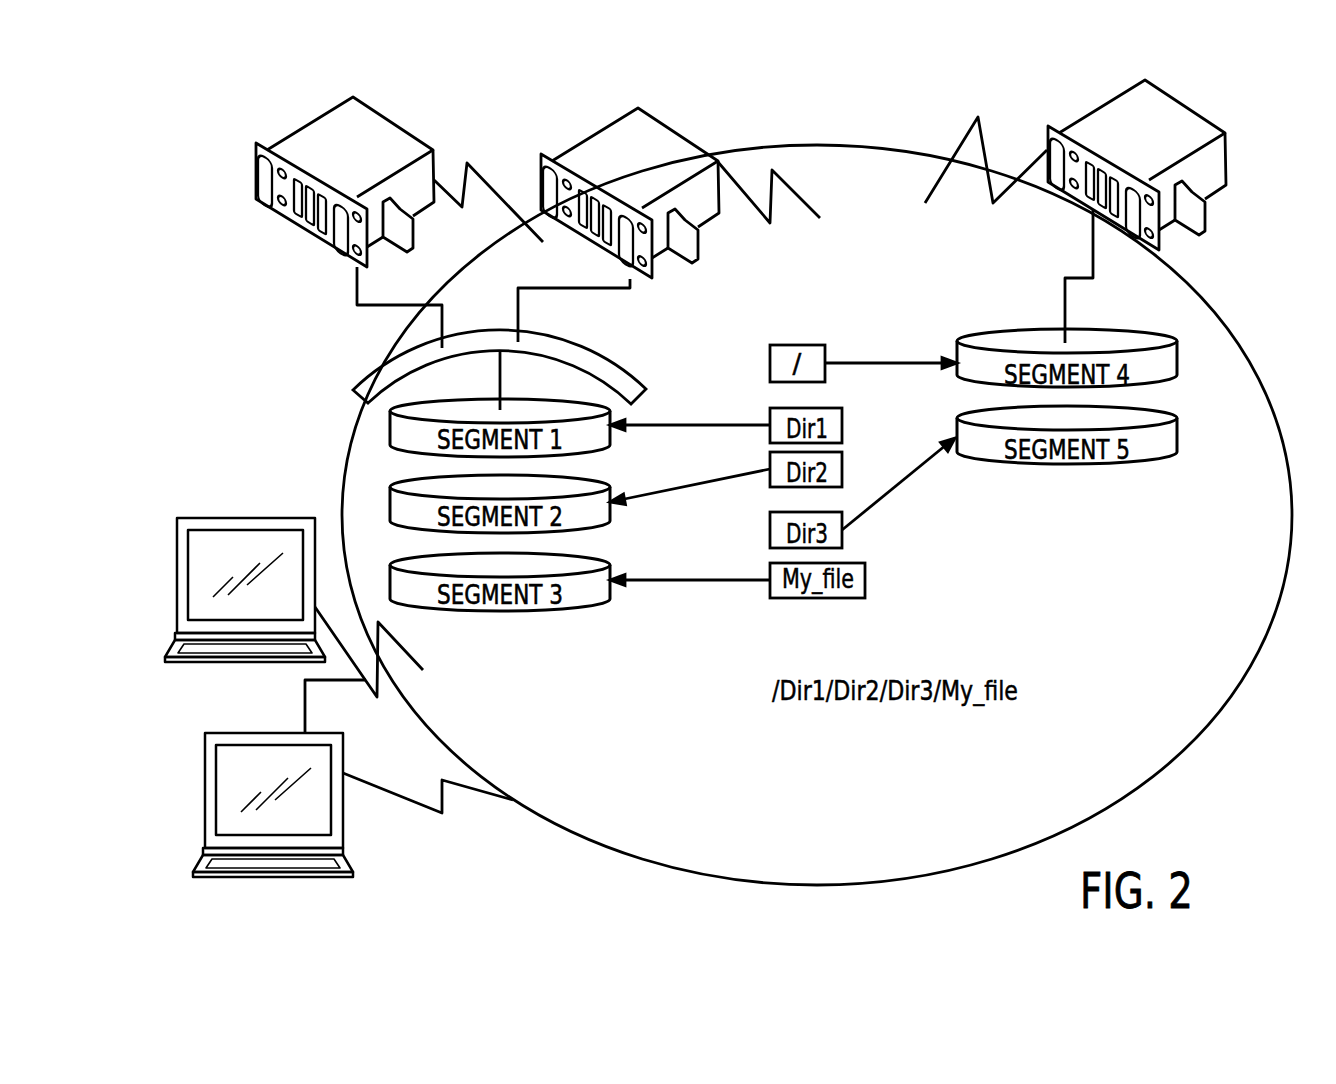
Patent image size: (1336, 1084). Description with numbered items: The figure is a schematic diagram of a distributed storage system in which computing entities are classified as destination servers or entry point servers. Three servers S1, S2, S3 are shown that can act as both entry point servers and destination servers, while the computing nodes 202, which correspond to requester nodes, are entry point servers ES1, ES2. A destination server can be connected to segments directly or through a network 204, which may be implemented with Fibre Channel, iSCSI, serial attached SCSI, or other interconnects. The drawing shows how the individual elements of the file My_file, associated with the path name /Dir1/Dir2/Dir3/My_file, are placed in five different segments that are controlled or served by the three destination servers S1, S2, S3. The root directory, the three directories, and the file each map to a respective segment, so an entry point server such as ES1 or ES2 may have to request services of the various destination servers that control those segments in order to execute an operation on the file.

The computing nodes 202 is at (227, 714).
The network 204 is at (597, 356).
The server S1 is at (315, 185).
The server S2 is at (668, 203).
The server S3 is at (1179, 174).
The entry point server ES1 is at (245, 607).
The entry point server ES2 is at (273, 822).